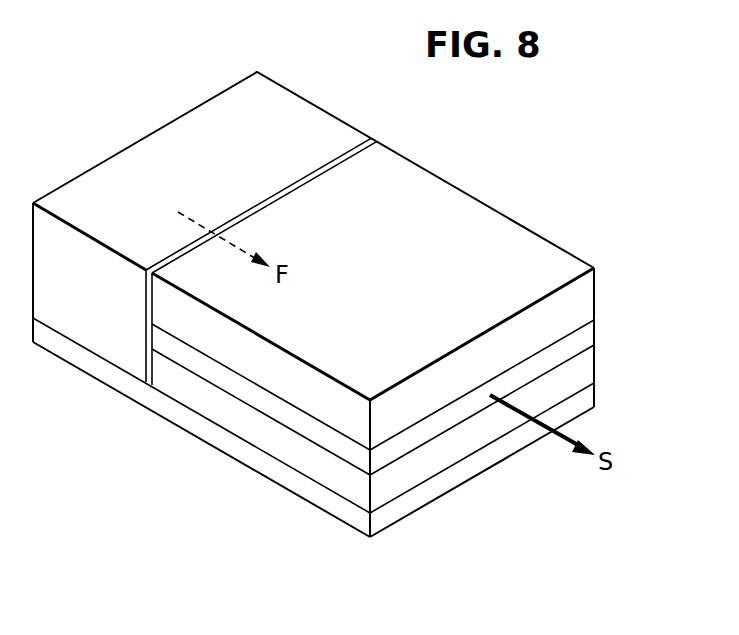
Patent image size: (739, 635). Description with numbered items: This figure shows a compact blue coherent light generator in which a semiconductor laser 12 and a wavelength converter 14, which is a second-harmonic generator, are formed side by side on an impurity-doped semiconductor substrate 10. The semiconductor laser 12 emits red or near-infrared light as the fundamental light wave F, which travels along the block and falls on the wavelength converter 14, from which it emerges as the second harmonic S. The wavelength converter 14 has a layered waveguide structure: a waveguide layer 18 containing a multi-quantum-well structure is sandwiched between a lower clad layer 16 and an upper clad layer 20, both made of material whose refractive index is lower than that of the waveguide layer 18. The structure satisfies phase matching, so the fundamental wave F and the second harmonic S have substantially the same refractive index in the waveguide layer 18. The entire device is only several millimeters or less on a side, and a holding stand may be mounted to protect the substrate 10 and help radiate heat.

The semiconductor substrate 10 is at (468, 472).
The semiconductor laser 12 is at (305, 115).
The wavelength converter 14 is at (487, 223).
The clad layer 16 is at (587, 363).
The waveguide layer 18 is at (590, 337).
The clad layer 20 is at (587, 295).